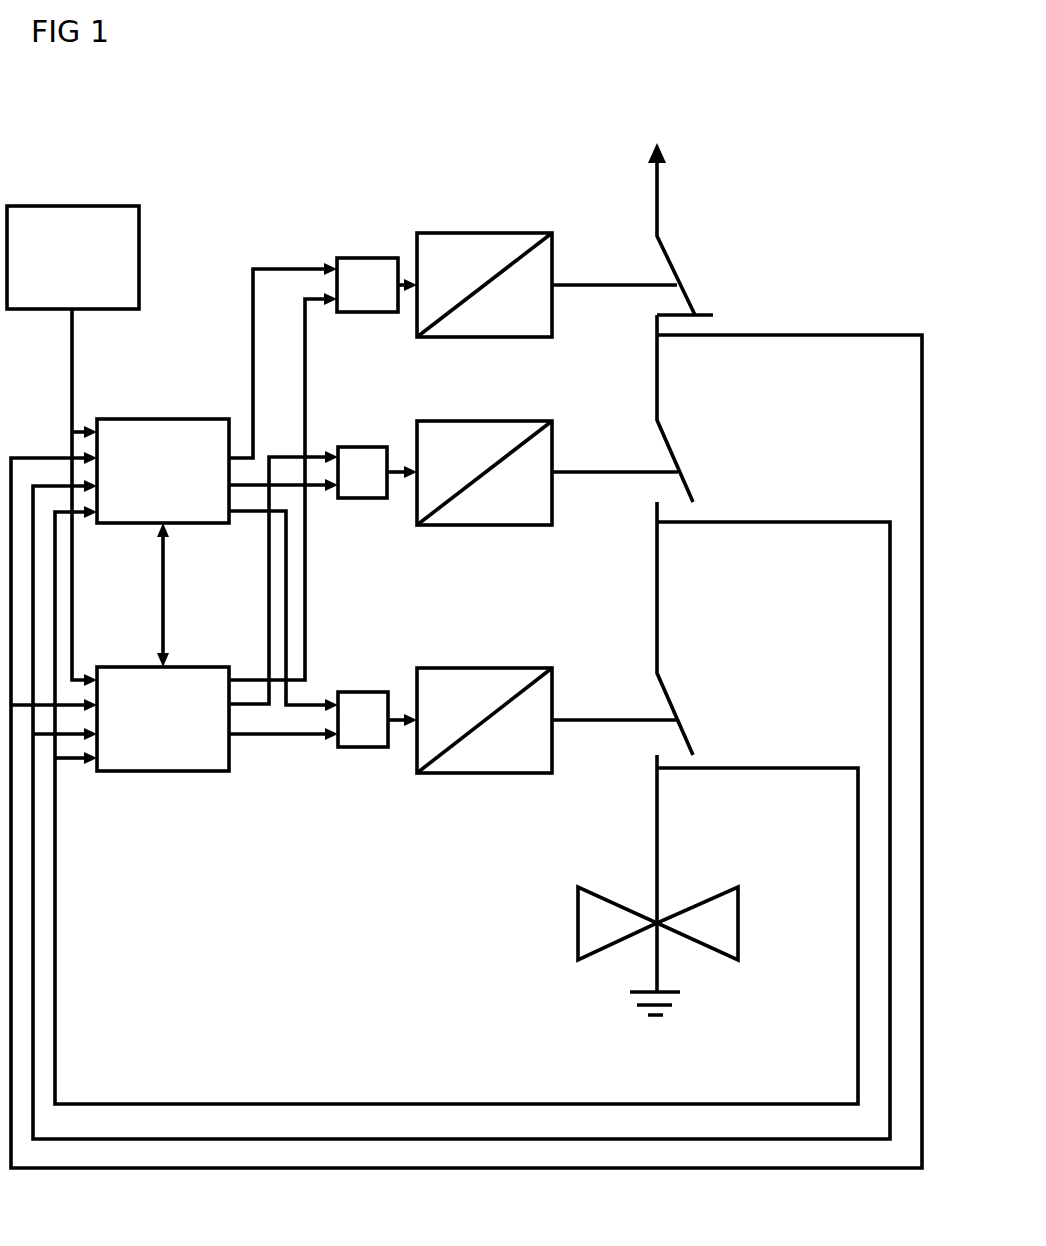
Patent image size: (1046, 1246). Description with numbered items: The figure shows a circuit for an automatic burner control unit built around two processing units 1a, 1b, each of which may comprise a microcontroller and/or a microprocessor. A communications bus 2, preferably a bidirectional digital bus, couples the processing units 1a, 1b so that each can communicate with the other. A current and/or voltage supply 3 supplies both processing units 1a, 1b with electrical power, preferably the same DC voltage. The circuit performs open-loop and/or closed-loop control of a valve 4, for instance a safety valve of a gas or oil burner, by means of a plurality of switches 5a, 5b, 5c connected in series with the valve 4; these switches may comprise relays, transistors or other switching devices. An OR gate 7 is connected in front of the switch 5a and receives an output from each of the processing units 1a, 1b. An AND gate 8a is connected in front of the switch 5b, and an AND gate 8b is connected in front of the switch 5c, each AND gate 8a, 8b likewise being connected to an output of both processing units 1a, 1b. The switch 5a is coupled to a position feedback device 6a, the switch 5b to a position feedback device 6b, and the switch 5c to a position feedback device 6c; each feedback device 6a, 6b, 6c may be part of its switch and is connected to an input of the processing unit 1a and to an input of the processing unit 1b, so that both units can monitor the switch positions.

The processing unit 1a is at (163, 471).
The processing unit 1b is at (163, 719).
The communications bus 2 is at (174, 595).
The current and/or voltage supply 3 is at (73, 446).
The valve 4 is at (658, 885).
The switch 5a is at (646, 229).
The switch 5b is at (645, 408).
The switch 5c is at (646, 628).
The position feedback device 6a is at (466, 728).
The position feedback device 6b is at (461, 809).
The position feedback device 6c is at (456, 805).
The OR gate 7 is at (323, 448).
The AND gate 8a is at (323, 557).
The AND gate 8b is at (323, 629).